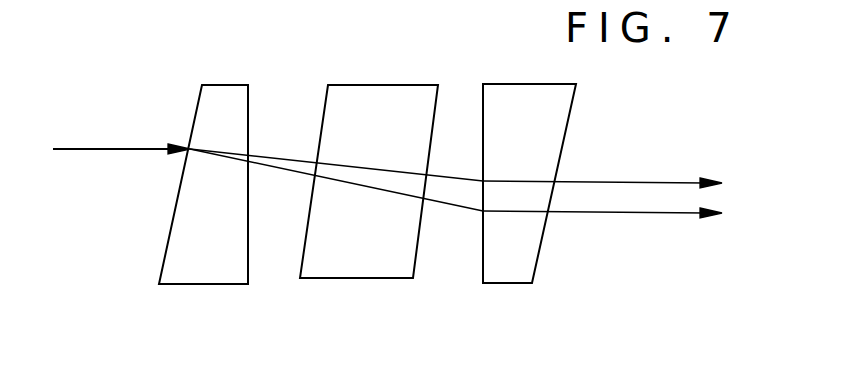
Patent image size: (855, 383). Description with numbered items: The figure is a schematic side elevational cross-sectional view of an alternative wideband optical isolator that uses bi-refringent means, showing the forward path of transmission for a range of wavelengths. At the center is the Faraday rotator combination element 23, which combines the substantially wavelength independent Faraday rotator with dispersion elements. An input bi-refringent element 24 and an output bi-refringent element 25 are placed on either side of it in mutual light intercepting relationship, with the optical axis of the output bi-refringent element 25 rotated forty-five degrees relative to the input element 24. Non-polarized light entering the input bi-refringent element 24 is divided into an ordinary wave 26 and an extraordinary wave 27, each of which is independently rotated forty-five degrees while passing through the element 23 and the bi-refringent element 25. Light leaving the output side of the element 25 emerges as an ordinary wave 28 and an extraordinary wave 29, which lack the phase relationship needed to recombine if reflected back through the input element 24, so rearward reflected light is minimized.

The Faraday rotator combination element 23 is at (385, 270).
The input bi-refringent element 24 is at (195, 278).
The output bi-refringent element 25 is at (530, 270).
The ordinary wave 26 is at (283, 158).
The extraordinary wave 27 is at (300, 172).
The ordinary wave 28 is at (670, 183).
The extraordinary wave 29 is at (668, 213).